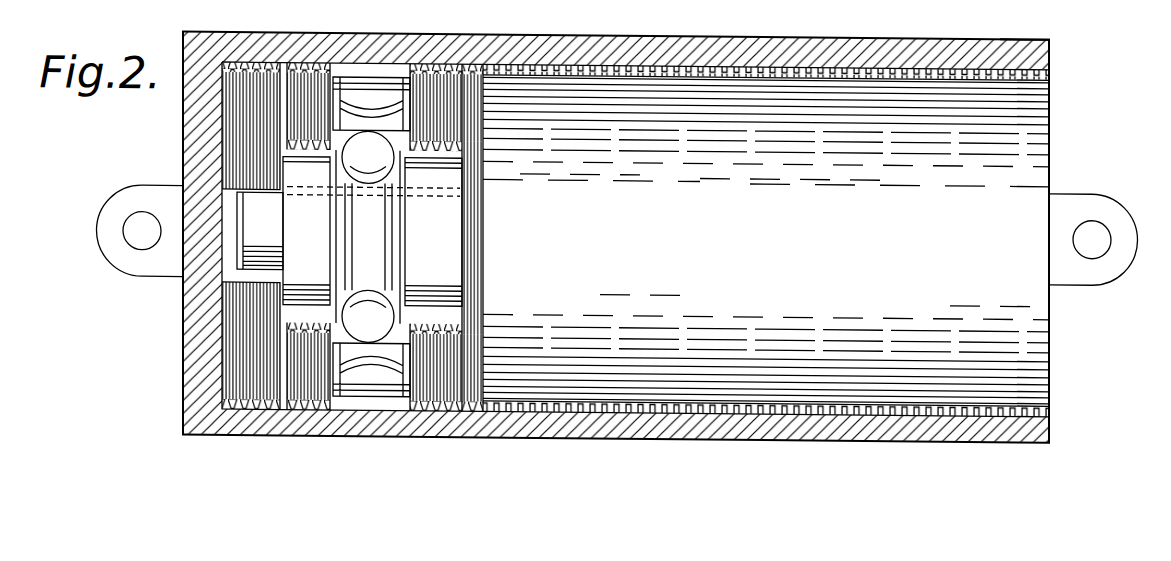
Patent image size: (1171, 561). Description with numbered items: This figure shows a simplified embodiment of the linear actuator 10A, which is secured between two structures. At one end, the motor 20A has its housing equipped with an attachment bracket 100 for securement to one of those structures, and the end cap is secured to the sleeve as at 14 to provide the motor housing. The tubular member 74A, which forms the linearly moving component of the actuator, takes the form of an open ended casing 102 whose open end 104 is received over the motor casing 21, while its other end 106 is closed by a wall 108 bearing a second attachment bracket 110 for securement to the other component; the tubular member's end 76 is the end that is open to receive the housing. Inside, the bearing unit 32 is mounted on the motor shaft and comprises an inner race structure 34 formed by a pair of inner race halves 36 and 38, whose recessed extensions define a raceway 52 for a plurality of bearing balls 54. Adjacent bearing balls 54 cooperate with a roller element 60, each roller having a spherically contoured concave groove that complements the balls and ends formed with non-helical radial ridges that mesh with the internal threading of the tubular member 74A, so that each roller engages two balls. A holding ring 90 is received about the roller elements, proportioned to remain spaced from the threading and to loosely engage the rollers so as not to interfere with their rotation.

The actuator 10A is at (1058, 60).
The securement point 14 is at (616, 35).
The motor 20A is at (1030, 133).
The motor casing 21 is at (1035, 171).
The bearing unit 32 is at (147, 392).
The inner race structure 34 is at (300, 285).
The inner race half 36 is at (303, 242).
The inner race half 38 is at (428, 243).
The raceway 52 is at (388, 221).
The bearing balls 54 is at (383, 310).
The roller element 60 is at (605, 253).
The tubular member 74A is at (697, 32).
The tubular member end 76 is at (766, 208).
The holding ring 90 is at (276, 205).
The attachment bracket 100 is at (1080, 277).
The open ended casing 102 is at (563, 33).
The open end 104 is at (1020, 36).
The closed end 106 is at (200, 435).
The wall 108 is at (193, 334).
The attachment bracket 110 is at (143, 189).